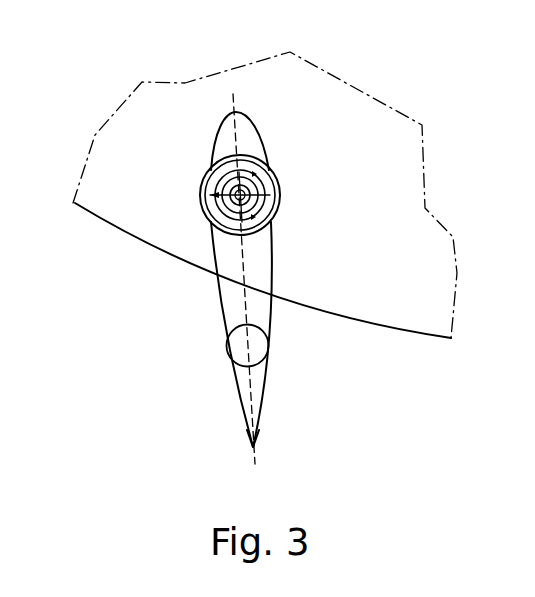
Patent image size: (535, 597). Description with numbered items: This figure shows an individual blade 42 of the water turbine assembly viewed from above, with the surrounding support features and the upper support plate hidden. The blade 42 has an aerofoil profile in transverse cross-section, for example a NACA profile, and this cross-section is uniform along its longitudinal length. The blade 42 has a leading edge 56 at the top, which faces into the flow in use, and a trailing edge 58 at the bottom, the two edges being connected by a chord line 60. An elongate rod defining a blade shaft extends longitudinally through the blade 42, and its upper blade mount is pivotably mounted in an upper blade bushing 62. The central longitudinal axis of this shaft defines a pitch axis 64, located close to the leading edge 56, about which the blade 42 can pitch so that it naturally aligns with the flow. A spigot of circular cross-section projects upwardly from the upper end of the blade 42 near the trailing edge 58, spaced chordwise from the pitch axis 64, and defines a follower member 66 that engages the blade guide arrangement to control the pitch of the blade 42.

The blade 42 is at (187, 303).
The leading edge 56 is at (232, 113).
The trailing edge 58 is at (255, 449).
The chord line 60 is at (248, 303).
The upper blade bushing 62 is at (200, 182).
The pitch axis 64 is at (245, 200).
The follower member 66 is at (257, 348).